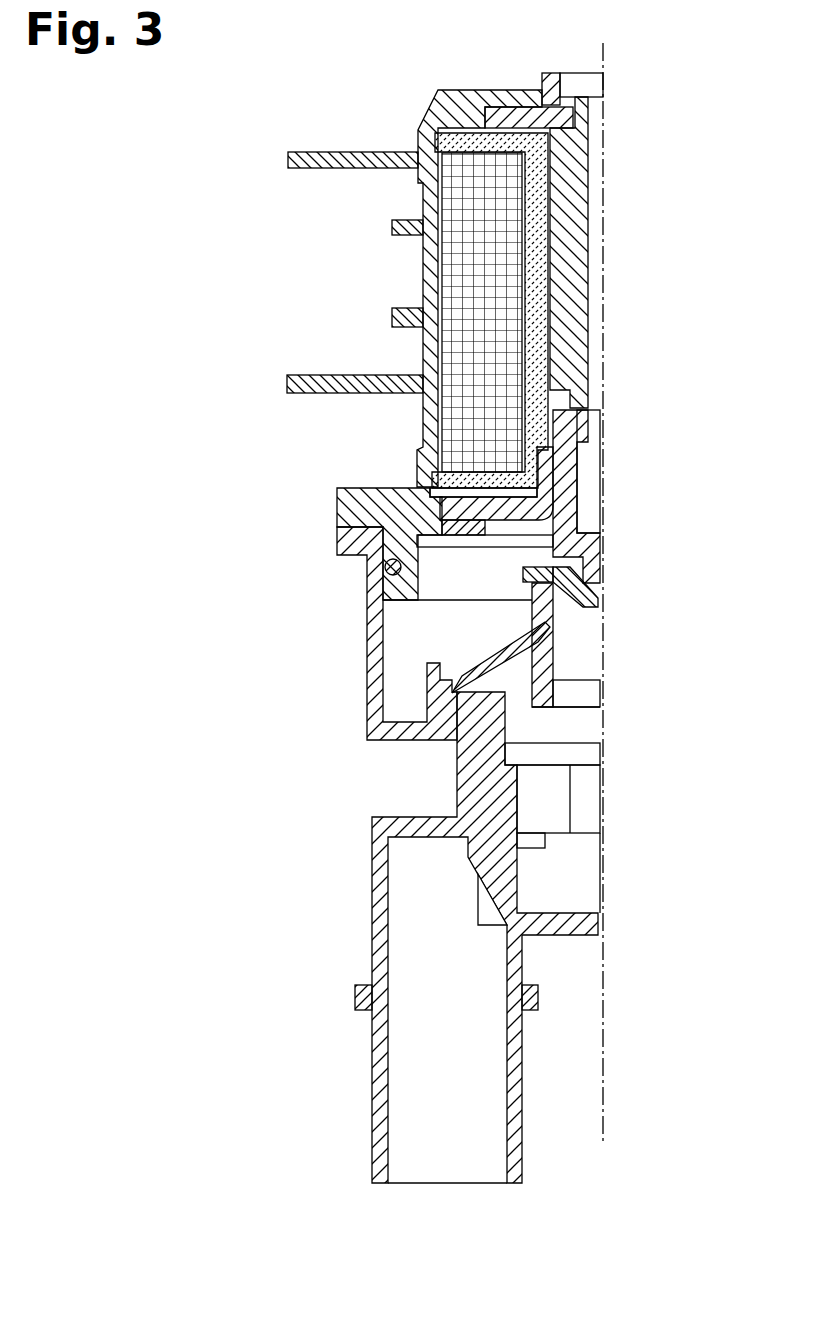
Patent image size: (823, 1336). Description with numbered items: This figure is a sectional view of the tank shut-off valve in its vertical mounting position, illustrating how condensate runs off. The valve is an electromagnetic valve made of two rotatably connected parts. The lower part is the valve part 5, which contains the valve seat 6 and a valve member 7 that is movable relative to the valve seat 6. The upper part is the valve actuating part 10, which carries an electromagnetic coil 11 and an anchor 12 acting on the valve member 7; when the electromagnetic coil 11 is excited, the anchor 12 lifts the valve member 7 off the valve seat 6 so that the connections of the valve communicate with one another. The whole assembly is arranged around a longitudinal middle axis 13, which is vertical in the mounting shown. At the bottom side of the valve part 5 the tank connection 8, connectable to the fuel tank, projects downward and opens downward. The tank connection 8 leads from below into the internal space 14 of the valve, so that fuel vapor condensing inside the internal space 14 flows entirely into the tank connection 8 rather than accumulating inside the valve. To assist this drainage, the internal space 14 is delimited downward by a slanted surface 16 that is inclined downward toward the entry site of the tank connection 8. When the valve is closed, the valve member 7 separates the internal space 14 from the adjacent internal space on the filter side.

The valve part 5 is at (340, 641).
The valve seat 6 is at (618, 596).
The valve member 7 is at (570, 478).
The tank connection 8 is at (421, 1075).
The valve actuating part 10 is at (362, 312).
The electromagnetic coil 11 is at (462, 205).
The anchor 12 is at (570, 280).
The longitudinal middle axis 13 is at (598, 1082).
The internal space 14 is at (430, 642).
The slanted surface 16 is at (503, 648).